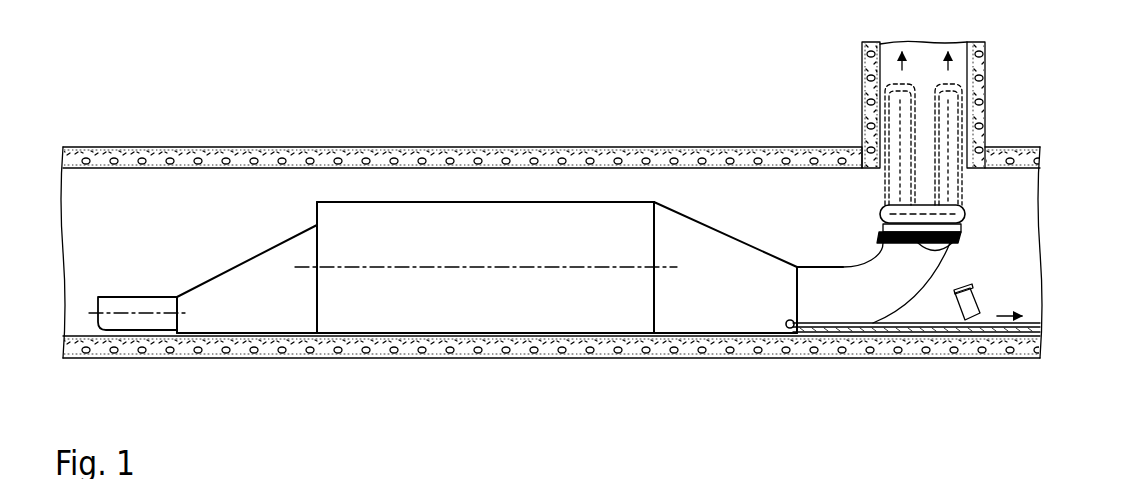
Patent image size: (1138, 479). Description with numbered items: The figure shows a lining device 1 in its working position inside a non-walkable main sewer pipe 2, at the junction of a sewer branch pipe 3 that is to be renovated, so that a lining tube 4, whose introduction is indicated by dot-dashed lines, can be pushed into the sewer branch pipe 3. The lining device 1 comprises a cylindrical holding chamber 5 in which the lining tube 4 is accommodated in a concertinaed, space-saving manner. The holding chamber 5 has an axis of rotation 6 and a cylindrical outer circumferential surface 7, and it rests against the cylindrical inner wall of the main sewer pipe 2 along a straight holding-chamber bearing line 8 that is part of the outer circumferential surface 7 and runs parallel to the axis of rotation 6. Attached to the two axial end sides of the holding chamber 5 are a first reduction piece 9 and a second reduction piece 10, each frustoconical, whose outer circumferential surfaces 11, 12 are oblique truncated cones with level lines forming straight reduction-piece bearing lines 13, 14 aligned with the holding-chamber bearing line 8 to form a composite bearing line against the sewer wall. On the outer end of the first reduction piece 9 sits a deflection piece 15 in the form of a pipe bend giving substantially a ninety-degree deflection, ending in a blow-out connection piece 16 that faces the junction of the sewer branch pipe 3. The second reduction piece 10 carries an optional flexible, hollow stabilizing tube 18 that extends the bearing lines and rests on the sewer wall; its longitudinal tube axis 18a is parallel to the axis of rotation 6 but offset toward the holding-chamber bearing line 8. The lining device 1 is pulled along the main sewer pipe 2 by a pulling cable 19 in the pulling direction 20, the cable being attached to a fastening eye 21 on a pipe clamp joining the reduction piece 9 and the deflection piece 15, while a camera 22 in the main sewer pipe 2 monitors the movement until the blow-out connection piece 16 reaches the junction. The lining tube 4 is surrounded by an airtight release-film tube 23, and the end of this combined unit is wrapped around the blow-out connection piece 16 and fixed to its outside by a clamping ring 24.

The lining device 1 is at (490, 186).
The main sewer pipe 2 is at (345, 147).
The sewer branch pipe 3 is at (983, 73).
The lining tube 4 is at (883, 205).
The holding chamber 5 is at (373, 318).
The axis of rotation 6 is at (428, 268).
The cylindrical outer circumferential surface 7 is at (578, 202).
The holding-chamber bearing line 8 is at (452, 336).
The first reduction piece 9 is at (692, 216).
The second reduction piece 10 is at (225, 268).
The outer circumferential surface 11 is at (765, 320).
The outer circumferential surface 12 is at (238, 320).
The reduction-piece bearing line 13 is at (709, 336).
The reduction-piece bearing line 14 is at (277, 334).
The deflection piece 15 is at (922, 298).
The blow-out connection piece 16 is at (937, 206).
The stabilizing tube 18 is at (160, 328).
The longitudinal tube axis 18a is at (115, 314).
The pulling cable 19 is at (1038, 330).
The pulling direction 20 is at (1013, 307).
The fastening eye 21 is at (794, 331).
The camera 22 is at (971, 319).
The release-film tube 23 is at (930, 250).
The clamping ring 24 is at (962, 227).